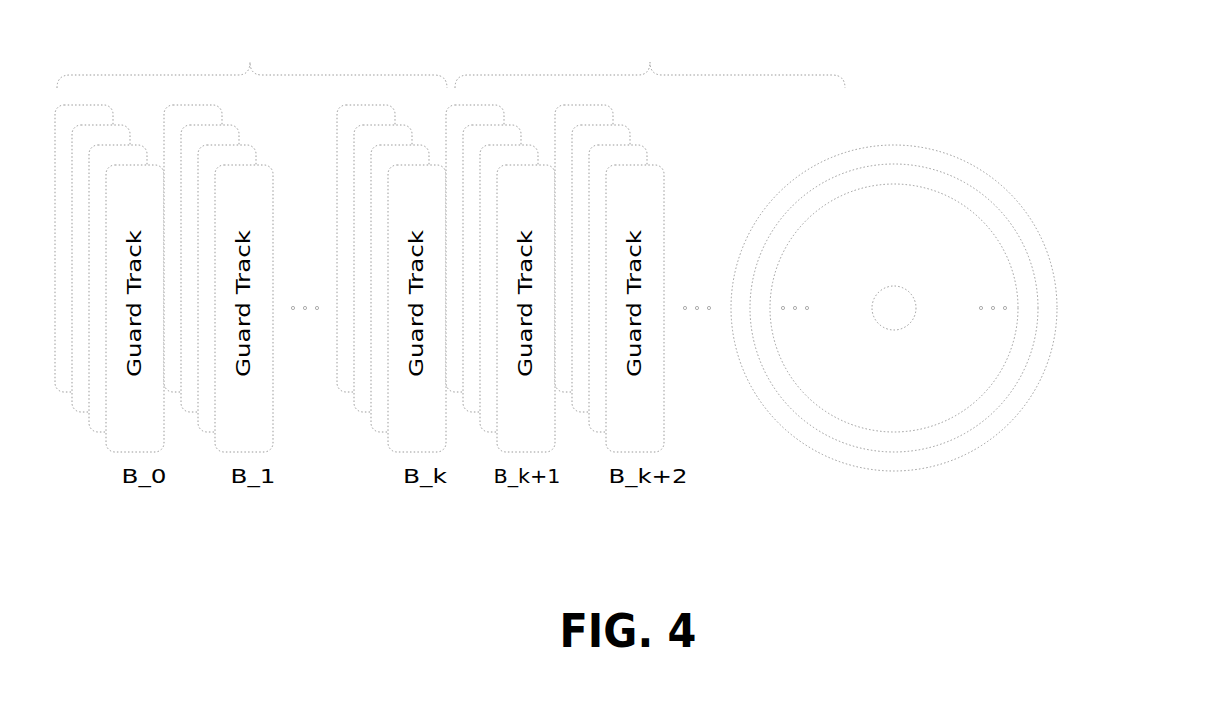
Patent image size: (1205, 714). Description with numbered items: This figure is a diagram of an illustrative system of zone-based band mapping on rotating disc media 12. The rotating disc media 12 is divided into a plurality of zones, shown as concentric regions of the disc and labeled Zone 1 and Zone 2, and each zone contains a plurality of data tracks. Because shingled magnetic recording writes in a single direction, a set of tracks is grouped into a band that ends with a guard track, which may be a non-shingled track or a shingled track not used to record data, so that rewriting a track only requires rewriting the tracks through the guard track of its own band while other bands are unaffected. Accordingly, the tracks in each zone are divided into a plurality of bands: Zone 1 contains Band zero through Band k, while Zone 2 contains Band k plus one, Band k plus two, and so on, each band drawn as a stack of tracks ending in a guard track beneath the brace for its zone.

The rotating disc media 12 is at (620, 247).
The Zone 1 is at (1044, 290).
The Zone 2 is at (1020, 272).